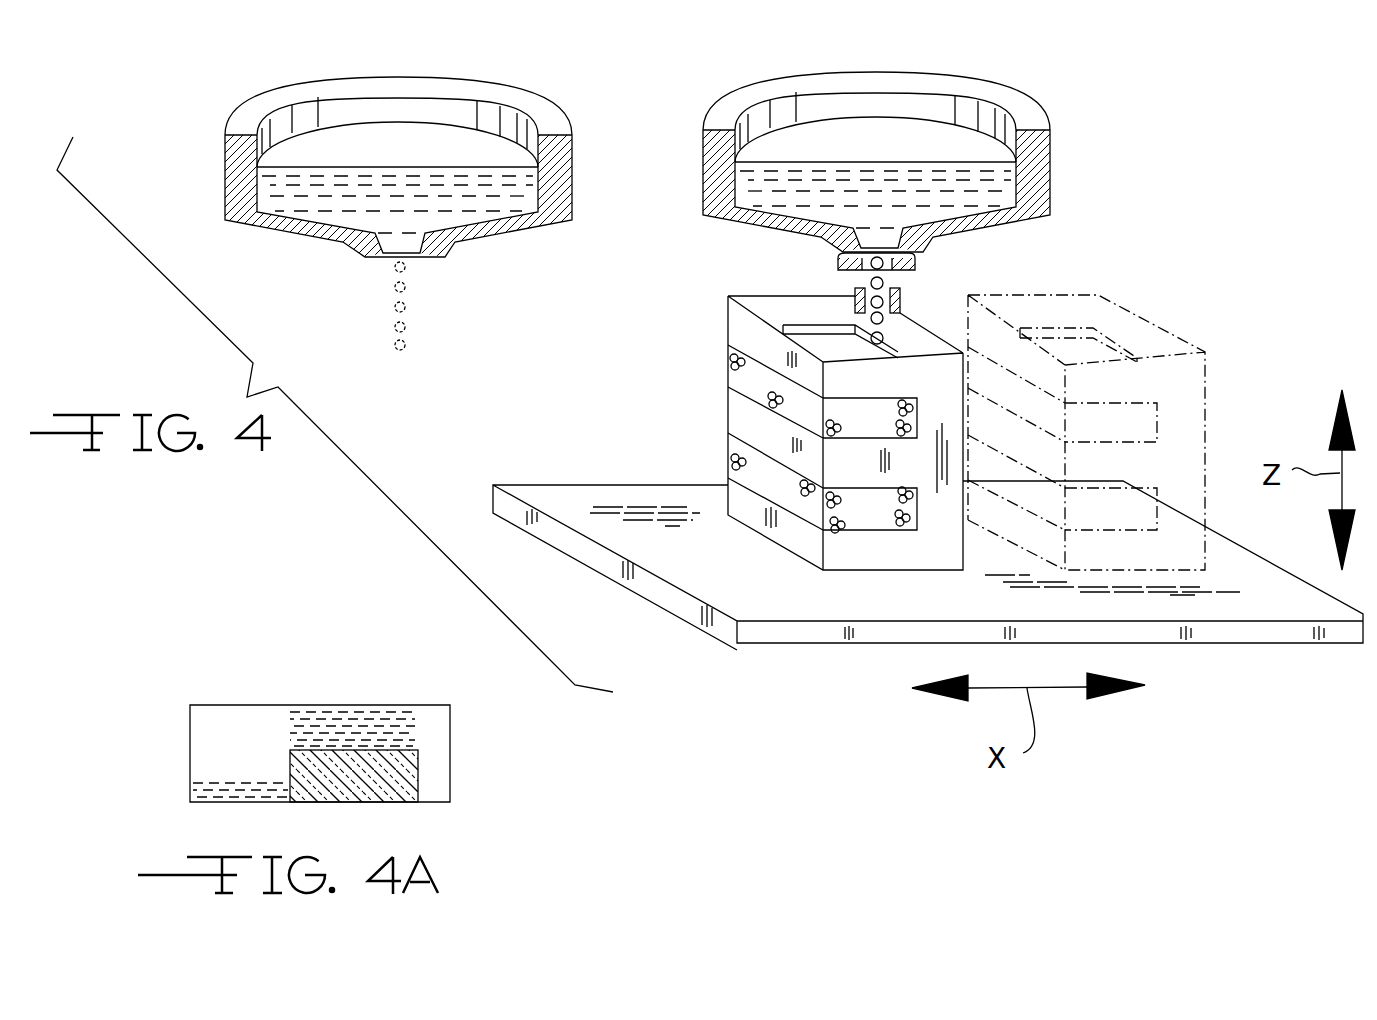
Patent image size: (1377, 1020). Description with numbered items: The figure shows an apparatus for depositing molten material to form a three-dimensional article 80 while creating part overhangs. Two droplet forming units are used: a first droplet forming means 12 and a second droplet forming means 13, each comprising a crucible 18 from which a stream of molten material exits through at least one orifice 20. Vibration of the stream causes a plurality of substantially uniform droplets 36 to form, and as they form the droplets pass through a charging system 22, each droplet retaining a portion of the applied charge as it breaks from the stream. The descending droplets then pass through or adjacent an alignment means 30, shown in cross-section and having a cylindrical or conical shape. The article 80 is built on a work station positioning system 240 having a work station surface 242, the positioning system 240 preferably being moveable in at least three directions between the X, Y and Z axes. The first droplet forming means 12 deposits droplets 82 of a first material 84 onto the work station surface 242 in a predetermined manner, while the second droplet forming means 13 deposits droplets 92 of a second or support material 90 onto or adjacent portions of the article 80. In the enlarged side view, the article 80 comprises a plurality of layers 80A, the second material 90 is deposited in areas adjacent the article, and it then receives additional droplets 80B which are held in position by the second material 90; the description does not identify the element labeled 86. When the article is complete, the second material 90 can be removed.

In FIG. 4, the first droplet forming means 12 is at (920, 141).
In FIG. 4, the second droplet forming means 13 is at (528, 284).
In FIG. 4, the crucible 18 is at (876, 191).
In FIG. 4, the orifice 20 is at (875, 189).
In FIG. 4, the charging system 22 is at (965, 249).
In FIG. 4, the alignment means 30 is at (857, 287).
In FIG. 4, the droplets 36 is at (887, 280).
In FIG. 4, the three-dimensional article 80 is at (727, 410).
In FIG. 4A, the three-dimensional article 80 is at (182, 745).
In FIG. 4A, the layers 80A is at (200, 803).
In FIG. 4A, the additional droplets 80B is at (373, 705).
In FIG. 4, the droplets of first material 82 is at (800, 453).
In FIG. 4, the first material 84 is at (860, 163).
In FIG. 4, the slot 86 is at (906, 370).
In FIG. 4, the second or support material 90 is at (330, 167).
In FIG. 4A, the second or support material 90 is at (383, 802).
In FIG. 4, the droplets of second material 92 is at (394, 307).
In FIG. 4, the work station positioning system 240 is at (572, 561).
In FIG. 4, the work station surface 242 is at (793, 608).